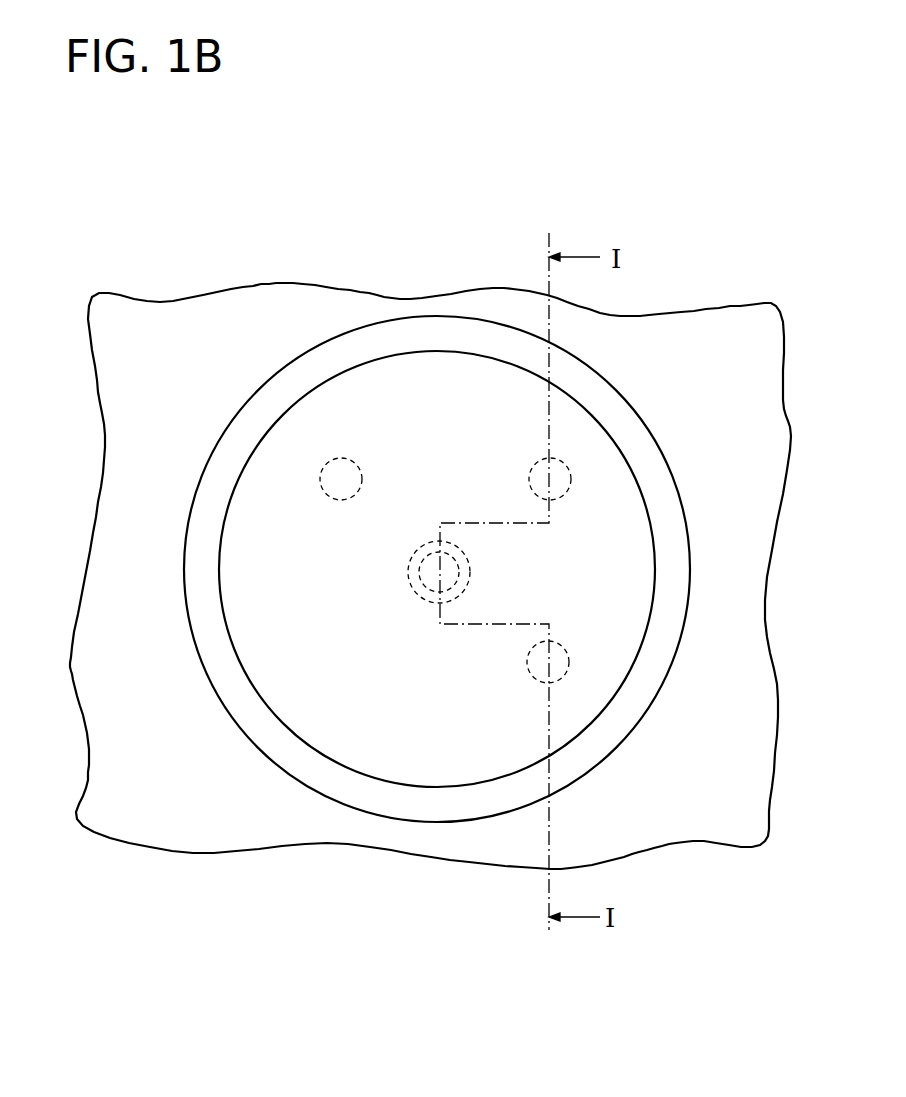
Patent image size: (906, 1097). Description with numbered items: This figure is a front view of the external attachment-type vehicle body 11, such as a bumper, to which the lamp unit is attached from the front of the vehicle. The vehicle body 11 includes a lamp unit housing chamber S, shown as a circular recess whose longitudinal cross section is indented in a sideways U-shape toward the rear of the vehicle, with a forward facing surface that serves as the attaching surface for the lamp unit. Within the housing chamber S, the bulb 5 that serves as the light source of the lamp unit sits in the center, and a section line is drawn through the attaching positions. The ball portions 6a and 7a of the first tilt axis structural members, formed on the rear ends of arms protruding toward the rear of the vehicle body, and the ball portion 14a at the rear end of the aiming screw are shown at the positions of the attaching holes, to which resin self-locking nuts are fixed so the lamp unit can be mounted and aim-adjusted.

The vehicle body 11 is at (241, 291).
The lamp unit housing chamber S is at (392, 322).
The ball portion 6a is at (536, 488).
The ball portion 7a is at (337, 498).
The bulb 5 is at (452, 568).
The ball portion 14a is at (537, 664).